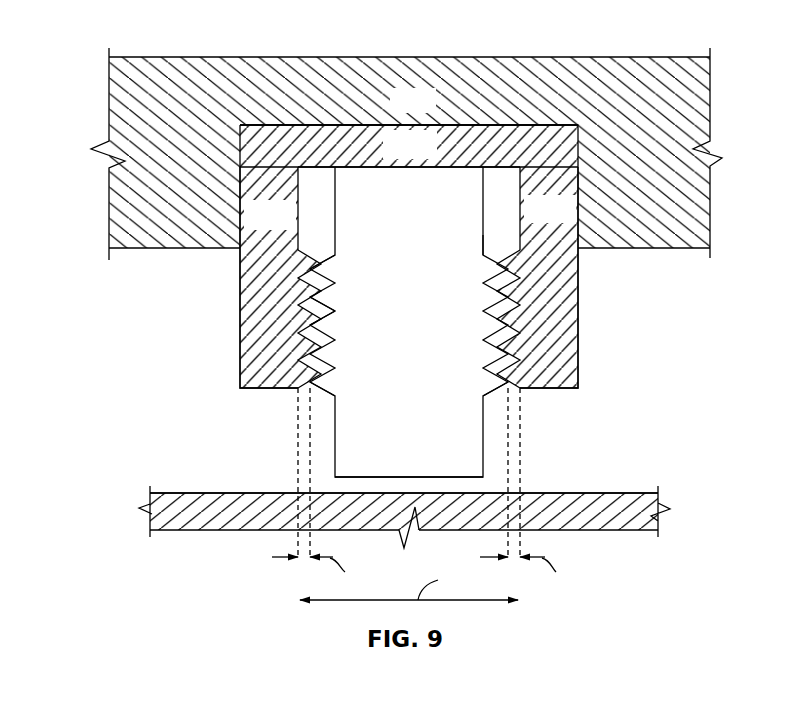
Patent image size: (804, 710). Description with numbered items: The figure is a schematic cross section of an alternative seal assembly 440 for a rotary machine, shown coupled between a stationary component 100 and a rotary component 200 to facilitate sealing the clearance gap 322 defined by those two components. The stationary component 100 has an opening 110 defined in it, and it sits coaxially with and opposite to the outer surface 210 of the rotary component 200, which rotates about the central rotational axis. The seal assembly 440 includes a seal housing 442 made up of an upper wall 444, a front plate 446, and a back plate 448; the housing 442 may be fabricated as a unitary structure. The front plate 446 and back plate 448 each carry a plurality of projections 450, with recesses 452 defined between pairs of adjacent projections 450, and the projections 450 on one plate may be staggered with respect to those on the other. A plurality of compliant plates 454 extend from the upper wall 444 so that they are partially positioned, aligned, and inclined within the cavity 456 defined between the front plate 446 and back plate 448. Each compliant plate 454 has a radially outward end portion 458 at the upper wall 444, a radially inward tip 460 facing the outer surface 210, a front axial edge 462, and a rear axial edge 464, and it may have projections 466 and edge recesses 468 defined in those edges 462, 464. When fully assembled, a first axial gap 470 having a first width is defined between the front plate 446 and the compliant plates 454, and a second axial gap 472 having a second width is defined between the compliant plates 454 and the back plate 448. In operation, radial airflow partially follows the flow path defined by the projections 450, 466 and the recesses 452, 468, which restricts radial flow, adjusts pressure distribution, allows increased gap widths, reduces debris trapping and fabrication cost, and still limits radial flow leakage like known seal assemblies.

The seal assembly 440 is at (128, 38).
The stationary component 100 is at (393, 110).
The opening 110 is at (533, 125).
The seal housing 442 is at (586, 268).
The upper wall 444 is at (390, 157).
The front plate 446 is at (248, 226).
The back plate 448 is at (528, 220).
The projections 450 is at (312, 257).
The recesses 452 is at (308, 317).
The compliant plates 454 is at (388, 391).
The cavity 456 is at (501, 192).
The radially outward end portion 458 is at (423, 168).
The radially inward tip 460 is at (410, 477).
The front axial edge 462 is at (336, 252).
The rear axial edge 464 is at (483, 238).
The projections 466 is at (330, 320).
The edge recesses 468 is at (332, 303).
The first axial gap 470 is at (304, 393).
The second axial gap 472 is at (511, 393).
The clearance gap 322 is at (475, 487).
The outer surface 210 is at (584, 493).
The rotary component 200 is at (658, 521).